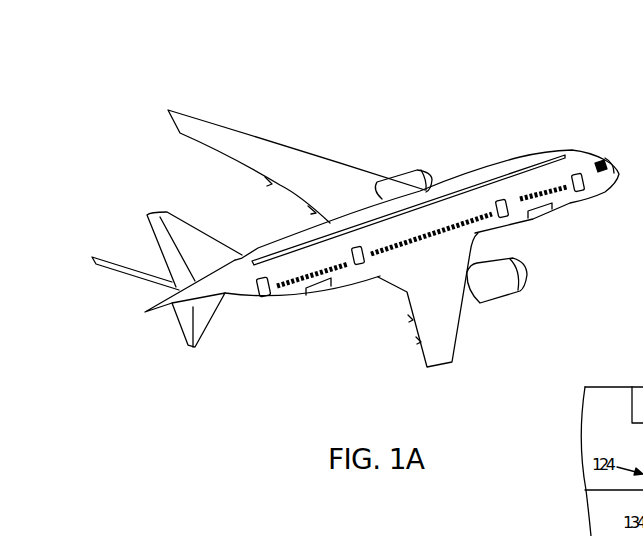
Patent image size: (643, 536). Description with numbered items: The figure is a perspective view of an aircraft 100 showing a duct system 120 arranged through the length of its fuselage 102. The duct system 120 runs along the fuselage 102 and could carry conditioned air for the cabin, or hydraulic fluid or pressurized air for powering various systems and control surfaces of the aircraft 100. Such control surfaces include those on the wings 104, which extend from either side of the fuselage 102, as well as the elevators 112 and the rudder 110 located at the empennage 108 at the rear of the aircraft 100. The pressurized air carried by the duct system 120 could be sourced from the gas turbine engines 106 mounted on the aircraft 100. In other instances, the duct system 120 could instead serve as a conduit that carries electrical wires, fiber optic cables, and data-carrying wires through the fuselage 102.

The aircraft 100 is at (490, 94).
The fuselage 102 is at (247, 298).
The wings 104 is at (272, 160).
The gas turbine engines 106 is at (412, 183).
The empennage 108 is at (158, 310).
The rudder 110 is at (197, 240).
The elevators 112 is at (135, 267).
The duct system 120 is at (527, 167).